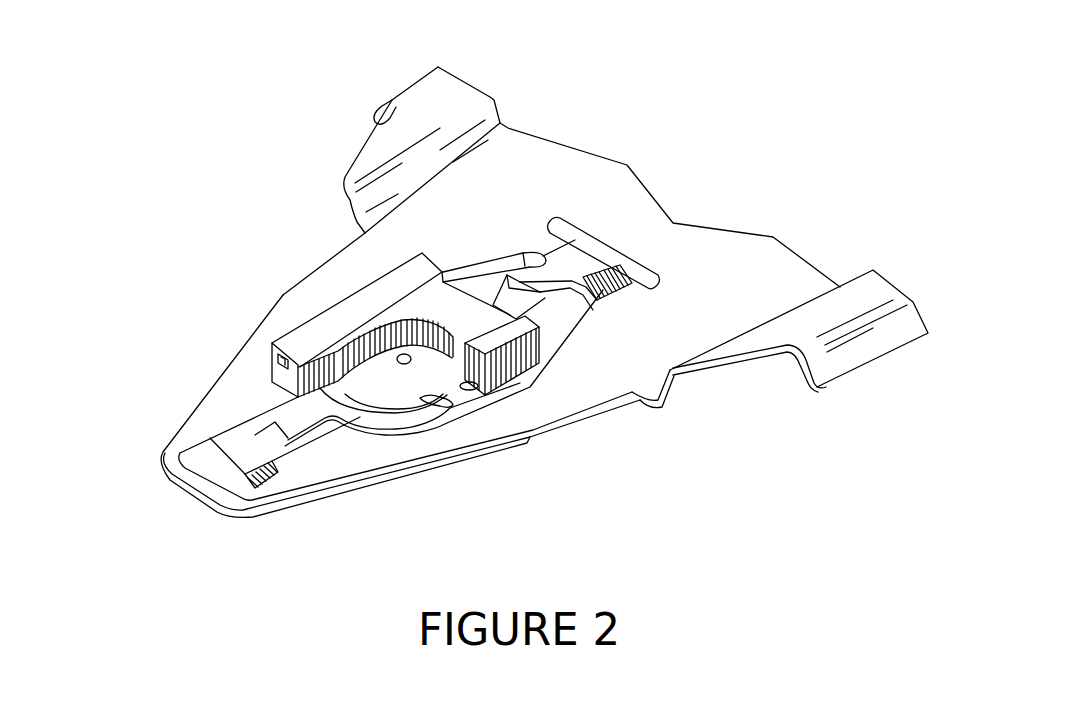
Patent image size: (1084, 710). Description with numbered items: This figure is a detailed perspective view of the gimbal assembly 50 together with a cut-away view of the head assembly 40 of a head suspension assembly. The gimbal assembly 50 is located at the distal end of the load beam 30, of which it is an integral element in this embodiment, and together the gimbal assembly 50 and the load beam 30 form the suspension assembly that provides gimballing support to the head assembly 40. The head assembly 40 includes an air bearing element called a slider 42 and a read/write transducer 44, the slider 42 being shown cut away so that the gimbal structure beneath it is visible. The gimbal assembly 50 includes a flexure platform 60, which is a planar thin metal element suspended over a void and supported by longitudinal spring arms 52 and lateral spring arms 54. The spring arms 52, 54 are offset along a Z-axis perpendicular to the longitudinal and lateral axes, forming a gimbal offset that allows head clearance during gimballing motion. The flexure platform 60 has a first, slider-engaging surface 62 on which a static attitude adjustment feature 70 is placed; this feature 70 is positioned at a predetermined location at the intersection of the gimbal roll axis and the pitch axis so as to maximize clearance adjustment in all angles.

The load beam 30 is at (753, 260).
The head assembly 40 is at (358, 292).
The slider 42 is at (460, 305).
The read/write transducer 44 is at (280, 360).
The gimbal assembly 50 is at (399, 488).
The longitudinal spring arms 52 is at (298, 420).
The lateral spring arms 54 is at (428, 394).
The flexure platform 60 is at (373, 410).
The first surface 62 is at (417, 388).
The static attitude adjustment feature 70 is at (403, 366).